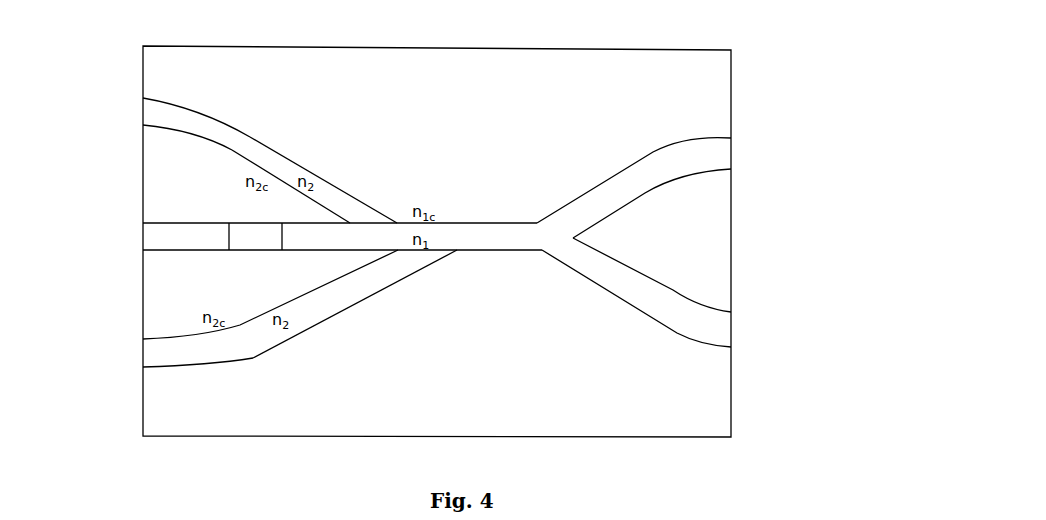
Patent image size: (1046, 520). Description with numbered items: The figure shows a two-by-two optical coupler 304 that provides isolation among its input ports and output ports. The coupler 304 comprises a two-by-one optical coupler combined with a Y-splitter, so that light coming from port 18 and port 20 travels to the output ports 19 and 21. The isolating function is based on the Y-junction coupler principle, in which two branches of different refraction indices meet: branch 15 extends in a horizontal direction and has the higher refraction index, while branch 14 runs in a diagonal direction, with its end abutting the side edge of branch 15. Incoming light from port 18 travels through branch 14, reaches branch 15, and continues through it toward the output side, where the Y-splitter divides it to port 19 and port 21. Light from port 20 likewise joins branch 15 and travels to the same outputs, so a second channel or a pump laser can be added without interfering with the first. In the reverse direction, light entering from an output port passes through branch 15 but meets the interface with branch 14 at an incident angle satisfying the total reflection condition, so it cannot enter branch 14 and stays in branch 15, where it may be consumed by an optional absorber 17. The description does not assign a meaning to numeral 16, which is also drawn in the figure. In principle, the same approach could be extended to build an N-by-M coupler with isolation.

The 2×2 optical coupler 304 is at (437, 226).
The branch 14 is at (251, 145).
The absorber 17 is at (245, 232).
The lower input waveguide 16 is at (340, 295).
The branch 15 is at (468, 238).
The port 18 is at (146, 124).
The port 20 is at (220, 308).
The port 19 is at (684, 180).
The output port 21 is at (683, 298).